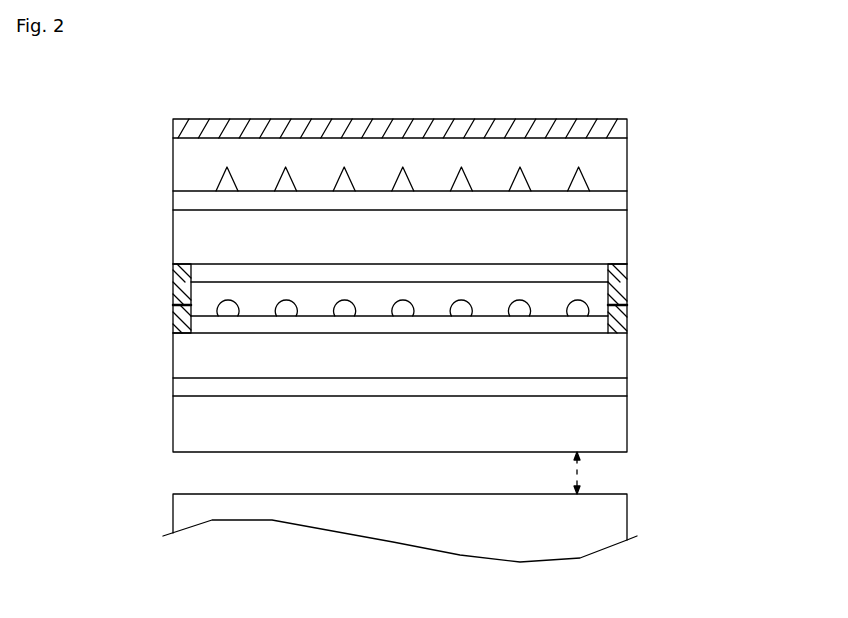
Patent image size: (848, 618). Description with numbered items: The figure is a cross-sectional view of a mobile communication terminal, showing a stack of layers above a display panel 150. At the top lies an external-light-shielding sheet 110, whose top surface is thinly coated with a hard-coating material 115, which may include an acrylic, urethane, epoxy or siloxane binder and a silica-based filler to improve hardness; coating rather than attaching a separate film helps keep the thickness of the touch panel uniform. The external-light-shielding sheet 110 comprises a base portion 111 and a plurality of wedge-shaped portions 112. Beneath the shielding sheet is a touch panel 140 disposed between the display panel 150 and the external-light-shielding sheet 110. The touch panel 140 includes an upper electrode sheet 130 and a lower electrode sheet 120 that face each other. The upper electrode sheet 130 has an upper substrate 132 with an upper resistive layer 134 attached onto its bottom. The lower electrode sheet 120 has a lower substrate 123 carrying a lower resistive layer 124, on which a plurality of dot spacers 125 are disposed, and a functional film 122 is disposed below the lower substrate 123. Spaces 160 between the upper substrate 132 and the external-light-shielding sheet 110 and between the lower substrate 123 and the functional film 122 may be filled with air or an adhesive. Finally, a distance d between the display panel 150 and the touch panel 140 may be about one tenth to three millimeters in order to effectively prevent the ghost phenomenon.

The external-light-shielding sheet 110 is at (712, 153).
The base portion 111 is at (612, 157).
The wedge-shaped portions 112 is at (582, 178).
The hard-coating material 115 is at (607, 127).
The lower electrode sheet 120 is at (712, 325).
The functional film 122 is at (613, 428).
The lower substrate 123 is at (613, 355).
The lower resistive layer 124 is at (590, 322).
The dot spacers 125 is at (588, 298).
The upper electrode sheet 130 is at (712, 272).
The upper substrate 132 is at (600, 228).
The upper resistive layer 134 is at (590, 273).
The touch panel 140 is at (775, 253).
The display panel 150 is at (613, 506).
The spaces 160 is at (192, 384).
The distance d is at (586, 473).